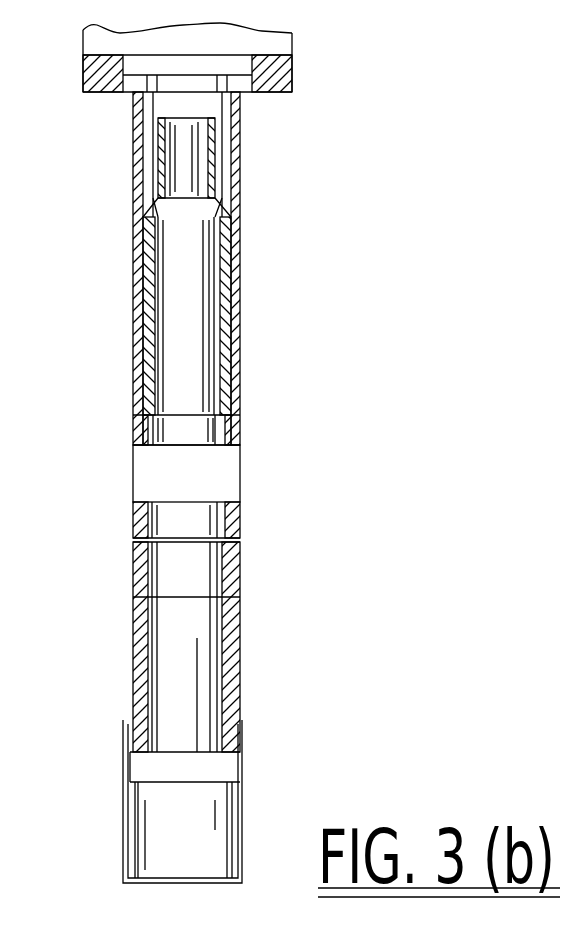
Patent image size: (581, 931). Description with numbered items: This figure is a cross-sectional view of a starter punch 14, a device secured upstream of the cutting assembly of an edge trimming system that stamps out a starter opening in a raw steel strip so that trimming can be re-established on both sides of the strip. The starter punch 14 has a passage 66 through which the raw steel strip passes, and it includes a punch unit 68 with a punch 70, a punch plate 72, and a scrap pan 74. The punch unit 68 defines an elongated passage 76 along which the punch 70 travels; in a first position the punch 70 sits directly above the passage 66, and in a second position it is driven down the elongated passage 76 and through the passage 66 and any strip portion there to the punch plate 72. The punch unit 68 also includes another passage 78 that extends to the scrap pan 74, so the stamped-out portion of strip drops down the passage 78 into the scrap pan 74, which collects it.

The starter punch 14 is at (327, 205).
The passage 66 is at (238, 478).
The punch unit 68 is at (134, 330).
The punch 70 is at (190, 303).
The punch plate 72 is at (238, 522).
The scrap pan 74 is at (243, 820).
The elongated passage 76 is at (240, 363).
The passage 78 is at (185, 683).